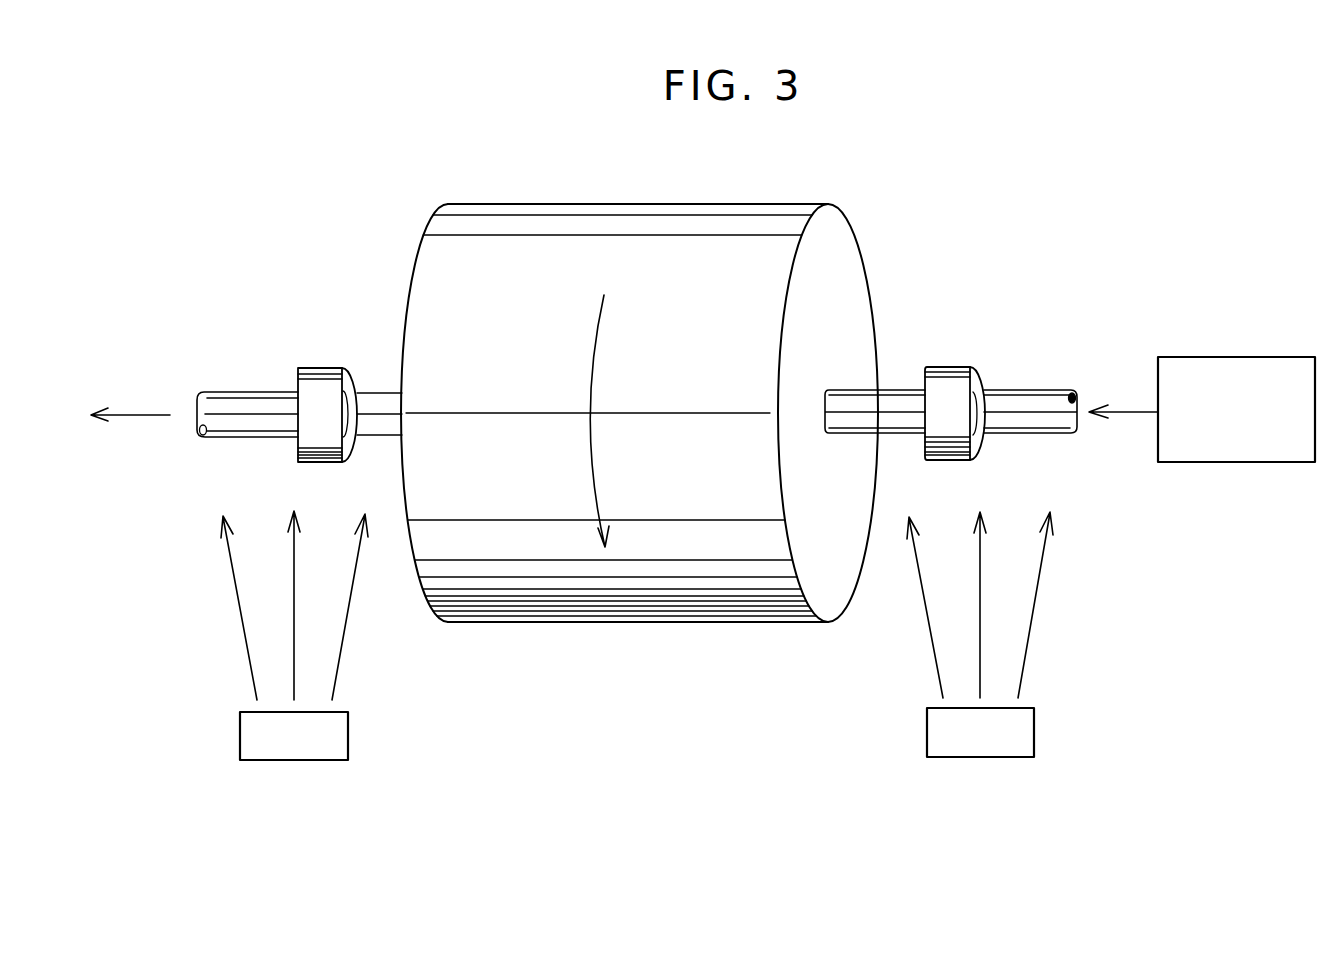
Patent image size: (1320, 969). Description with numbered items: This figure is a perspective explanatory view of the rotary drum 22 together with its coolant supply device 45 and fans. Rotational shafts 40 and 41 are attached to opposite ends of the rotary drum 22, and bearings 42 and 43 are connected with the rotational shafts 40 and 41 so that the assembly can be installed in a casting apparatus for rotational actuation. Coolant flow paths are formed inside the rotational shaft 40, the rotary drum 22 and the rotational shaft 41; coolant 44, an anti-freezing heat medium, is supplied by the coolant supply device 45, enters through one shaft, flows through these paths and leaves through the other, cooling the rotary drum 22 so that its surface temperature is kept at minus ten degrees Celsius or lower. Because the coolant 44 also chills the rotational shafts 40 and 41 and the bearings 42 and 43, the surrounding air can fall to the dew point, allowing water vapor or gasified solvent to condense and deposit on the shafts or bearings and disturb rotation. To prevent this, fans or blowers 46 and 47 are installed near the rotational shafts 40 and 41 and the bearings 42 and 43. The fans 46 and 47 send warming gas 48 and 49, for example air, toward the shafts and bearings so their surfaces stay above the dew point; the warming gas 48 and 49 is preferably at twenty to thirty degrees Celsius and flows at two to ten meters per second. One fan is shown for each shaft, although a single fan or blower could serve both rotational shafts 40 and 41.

The rotary drum 22 is at (836, 598).
The rotational shaft 40 is at (1026, 405).
The rotational shaft 41 is at (250, 410).
The bearing 42 is at (953, 370).
The bearing 43 is at (320, 387).
The coolant 44 is at (136, 415).
The coolant supply device 45 is at (1238, 357).
The fan 46 is at (1034, 733).
The fan 47 is at (348, 735).
The warming gas 48 is at (1033, 618).
The warming gas 49 is at (240, 628).